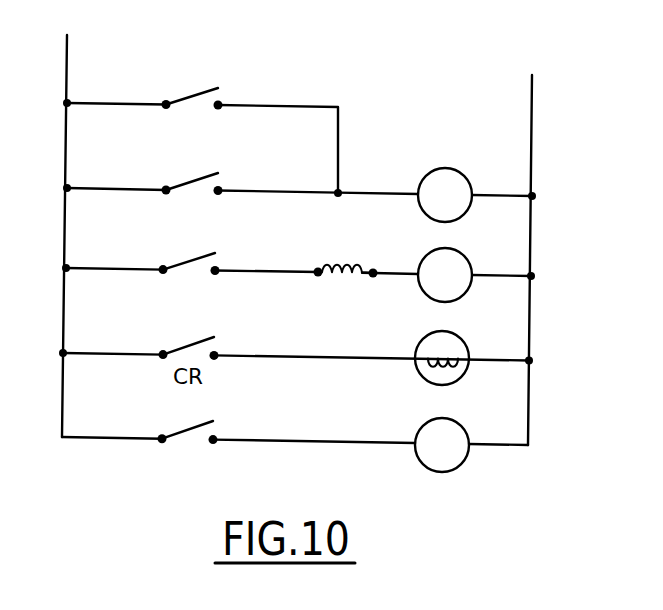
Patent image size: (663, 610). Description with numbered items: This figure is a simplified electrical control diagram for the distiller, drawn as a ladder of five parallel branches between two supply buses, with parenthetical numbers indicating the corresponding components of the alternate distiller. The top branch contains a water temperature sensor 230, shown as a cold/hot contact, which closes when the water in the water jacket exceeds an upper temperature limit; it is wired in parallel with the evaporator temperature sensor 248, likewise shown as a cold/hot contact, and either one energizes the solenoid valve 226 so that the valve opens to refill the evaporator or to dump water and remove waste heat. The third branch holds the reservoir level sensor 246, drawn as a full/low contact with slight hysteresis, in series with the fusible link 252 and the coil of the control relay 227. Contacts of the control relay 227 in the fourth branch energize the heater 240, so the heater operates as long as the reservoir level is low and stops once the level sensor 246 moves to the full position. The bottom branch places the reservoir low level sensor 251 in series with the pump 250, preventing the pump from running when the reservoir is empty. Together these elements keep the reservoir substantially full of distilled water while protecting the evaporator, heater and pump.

The water temperature selector switch (cold/hot) 230 is at (166, 103).
The evaporator temperature sensor 248 is at (165, 190).
The reservoir level sensor 246 is at (163, 269).
The fusible link 252 is at (321, 276).
The solenoid valve 226 is at (516, 152).
The control relay 227 is at (468, 262).
The heater 240 is at (468, 366).
The pump 250 is at (461, 463).
The reservoir low level sensor 251 is at (158, 442).